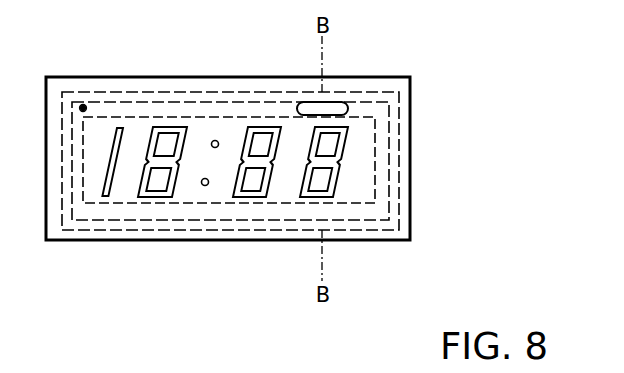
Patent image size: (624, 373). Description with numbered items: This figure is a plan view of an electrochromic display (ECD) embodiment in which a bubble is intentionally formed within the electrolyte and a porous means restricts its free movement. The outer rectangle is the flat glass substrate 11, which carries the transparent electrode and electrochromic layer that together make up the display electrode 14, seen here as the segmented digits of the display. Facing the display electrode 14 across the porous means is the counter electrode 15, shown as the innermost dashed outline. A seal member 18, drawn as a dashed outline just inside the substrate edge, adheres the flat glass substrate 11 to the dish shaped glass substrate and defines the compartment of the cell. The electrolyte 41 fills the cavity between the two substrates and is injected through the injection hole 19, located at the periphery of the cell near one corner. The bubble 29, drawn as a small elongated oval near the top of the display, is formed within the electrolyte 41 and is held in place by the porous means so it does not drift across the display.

The flat glass substrate 11 is at (408, 94).
The display electrode 14 is at (158, 126).
The counter electrode 15 is at (362, 185).
The seal member 18 is at (393, 129).
The injection hole 19 is at (82, 105).
The bubble 29 is at (337, 108).
The electrolyte 41 is at (382, 162).